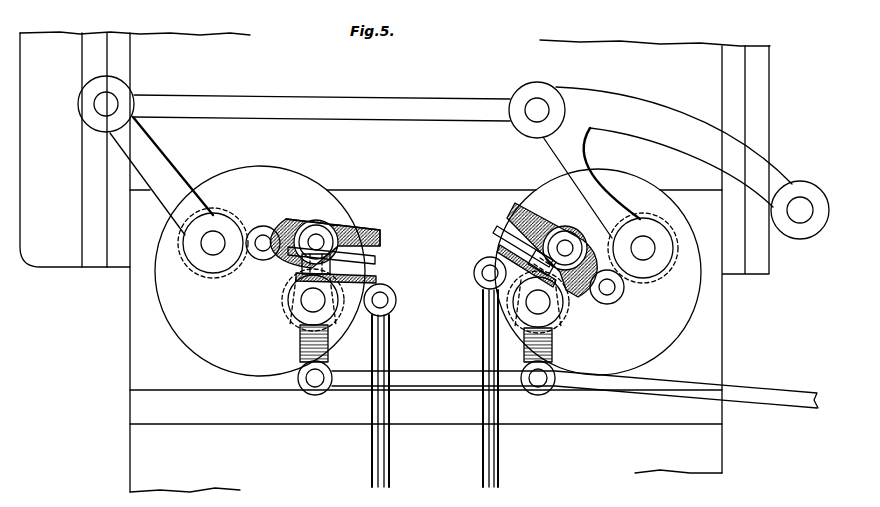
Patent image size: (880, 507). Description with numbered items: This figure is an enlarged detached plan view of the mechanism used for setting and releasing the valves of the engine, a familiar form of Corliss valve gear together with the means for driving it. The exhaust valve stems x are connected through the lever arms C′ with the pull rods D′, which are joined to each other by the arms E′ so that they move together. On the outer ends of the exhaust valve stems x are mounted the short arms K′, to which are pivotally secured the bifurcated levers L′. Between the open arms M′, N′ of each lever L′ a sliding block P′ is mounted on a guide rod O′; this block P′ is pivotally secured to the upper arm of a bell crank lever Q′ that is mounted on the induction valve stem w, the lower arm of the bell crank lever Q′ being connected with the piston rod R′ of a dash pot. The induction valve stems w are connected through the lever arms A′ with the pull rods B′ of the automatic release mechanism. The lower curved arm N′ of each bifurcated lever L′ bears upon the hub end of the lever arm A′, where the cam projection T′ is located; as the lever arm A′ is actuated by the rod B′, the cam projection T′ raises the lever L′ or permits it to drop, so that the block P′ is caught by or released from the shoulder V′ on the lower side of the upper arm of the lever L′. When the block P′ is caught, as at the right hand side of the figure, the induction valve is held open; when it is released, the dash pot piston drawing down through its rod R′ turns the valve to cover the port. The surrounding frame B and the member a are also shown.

The frame B is at (395, 262).
The fabric line a is at (426, 230).
The pull rods D′ is at (828, 222).
The arms E′ is at (674, 147).
The lever arms C′ is at (375, 177).
The exhaust valve stems x is at (428, 245).
The open arm of bifurcated lever M′ is at (386, 230).
The shoulder V′ is at (370, 213).
The bifurcated levers L′ is at (314, 225).
The short arms K′ is at (262, 226).
The guide rods O′ is at (376, 259).
The sliding blocks P′ is at (429, 251).
The lower curved arm of bifurcated lever N′ is at (378, 279).
The induction valve stems w is at (296, 312).
The cam projections T′ is at (290, 295).
The bell crank levers Q′ is at (288, 303).
The lever arms A′ is at (300, 352).
The pull rods B′ is at (748, 393).
The piston rods R′ is at (390, 450).